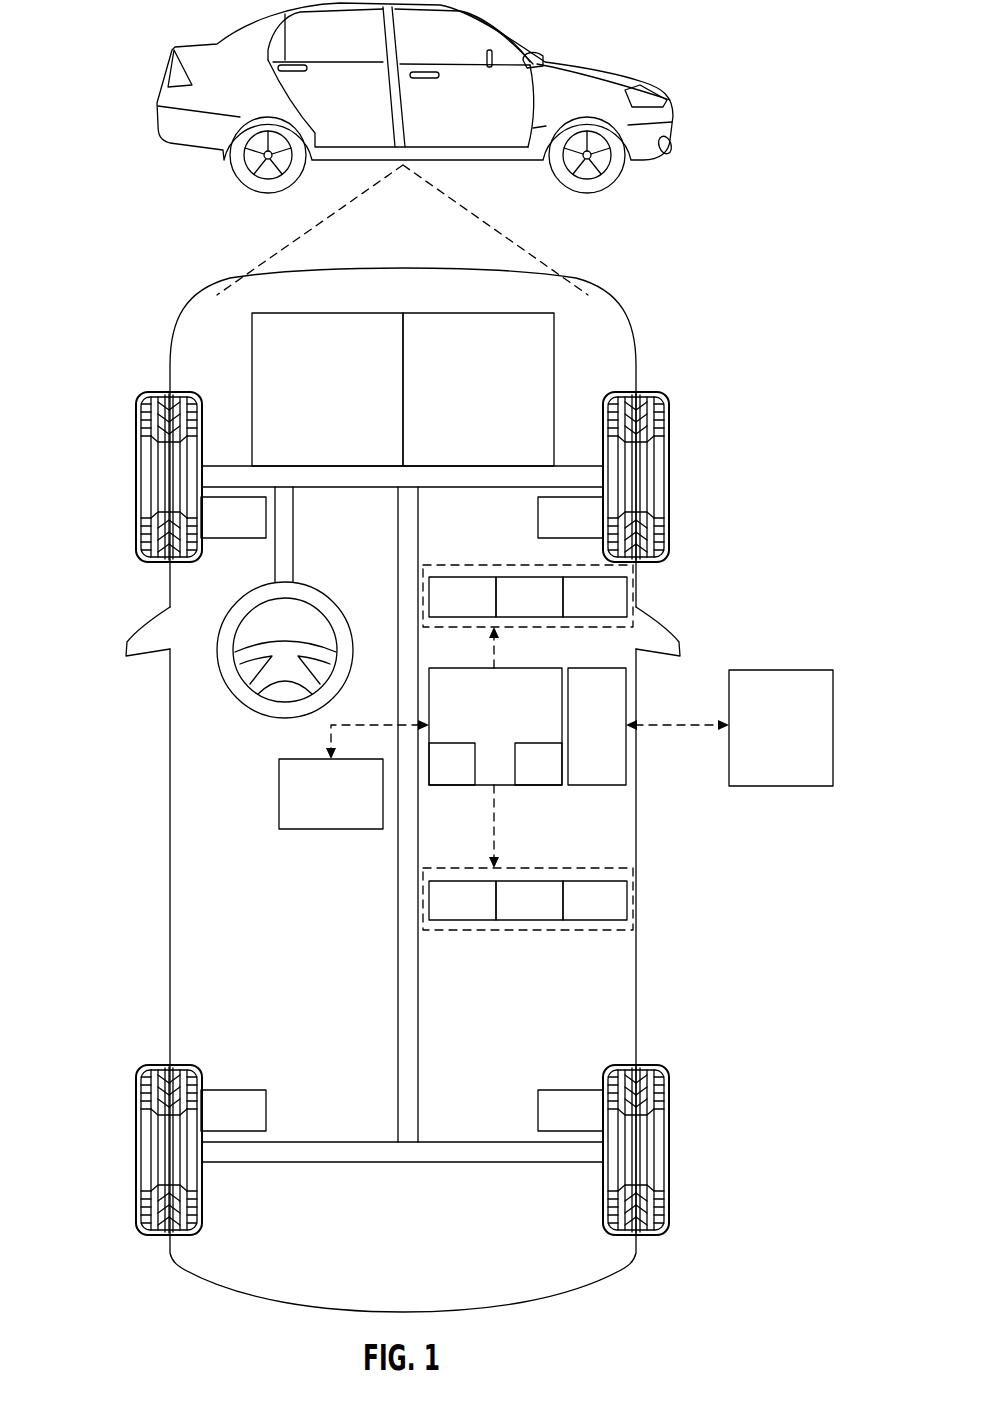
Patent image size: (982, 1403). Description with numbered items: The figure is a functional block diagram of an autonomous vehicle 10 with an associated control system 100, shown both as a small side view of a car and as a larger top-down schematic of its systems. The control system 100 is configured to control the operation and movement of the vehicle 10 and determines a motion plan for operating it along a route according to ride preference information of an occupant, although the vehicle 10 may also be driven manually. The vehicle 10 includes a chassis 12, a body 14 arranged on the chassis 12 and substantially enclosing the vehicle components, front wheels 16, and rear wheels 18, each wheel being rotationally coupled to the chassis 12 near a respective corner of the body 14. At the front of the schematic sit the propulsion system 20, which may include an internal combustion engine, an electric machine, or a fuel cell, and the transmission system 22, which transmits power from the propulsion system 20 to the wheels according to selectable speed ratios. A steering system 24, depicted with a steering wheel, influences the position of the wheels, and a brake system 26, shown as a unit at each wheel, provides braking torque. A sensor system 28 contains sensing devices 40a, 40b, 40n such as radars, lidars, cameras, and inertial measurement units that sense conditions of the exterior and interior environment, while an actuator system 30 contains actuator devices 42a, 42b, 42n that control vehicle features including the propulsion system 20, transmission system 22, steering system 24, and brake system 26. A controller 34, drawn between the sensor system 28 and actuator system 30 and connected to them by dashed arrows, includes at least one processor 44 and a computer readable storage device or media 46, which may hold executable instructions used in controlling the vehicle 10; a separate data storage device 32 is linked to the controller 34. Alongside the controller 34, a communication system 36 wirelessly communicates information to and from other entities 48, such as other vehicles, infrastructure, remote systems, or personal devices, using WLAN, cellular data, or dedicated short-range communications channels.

The vehicle 10 is at (167, 80).
The control system 100 is at (746, 286).
The chassis 12 is at (398, 1003).
The body 14 is at (170, 858).
The front wheels 16 is at (150, 392).
The rear wheels 18 is at (145, 1235).
The propulsion system 20 is at (342, 405).
The transmission system 22 is at (493, 405).
The steering system 24 is at (306, 557).
The brake system 26 is at (247, 531).
The sensor system 28 is at (528, 577).
The actuator system 30 is at (528, 921).
The data storage device 32 is at (346, 809).
The controller 34 is at (510, 722).
The communication system 36 is at (612, 742).
The sensing device 40a is at (484, 611).
The sensing device 40b is at (551, 611).
The sensing device 40n is at (617, 611).
The actuator device 42a is at (484, 914).
The actuator device 42b is at (551, 914).
The actuator device 42n is at (617, 914).
The processor 44 is at (466, 777).
The computer readable storage device or media 46 is at (552, 777).
The other entities 48 is at (796, 745).